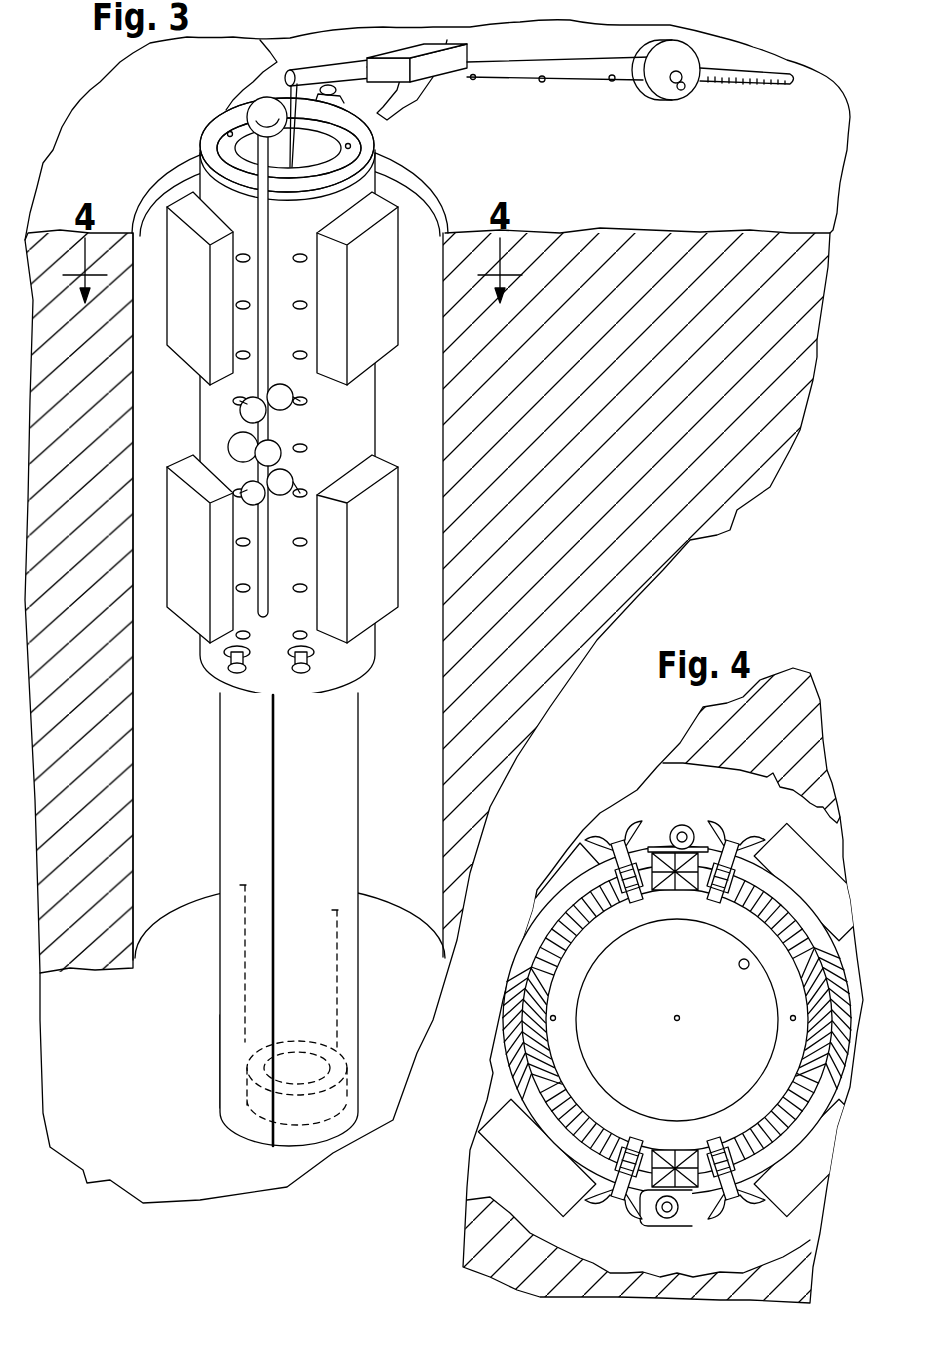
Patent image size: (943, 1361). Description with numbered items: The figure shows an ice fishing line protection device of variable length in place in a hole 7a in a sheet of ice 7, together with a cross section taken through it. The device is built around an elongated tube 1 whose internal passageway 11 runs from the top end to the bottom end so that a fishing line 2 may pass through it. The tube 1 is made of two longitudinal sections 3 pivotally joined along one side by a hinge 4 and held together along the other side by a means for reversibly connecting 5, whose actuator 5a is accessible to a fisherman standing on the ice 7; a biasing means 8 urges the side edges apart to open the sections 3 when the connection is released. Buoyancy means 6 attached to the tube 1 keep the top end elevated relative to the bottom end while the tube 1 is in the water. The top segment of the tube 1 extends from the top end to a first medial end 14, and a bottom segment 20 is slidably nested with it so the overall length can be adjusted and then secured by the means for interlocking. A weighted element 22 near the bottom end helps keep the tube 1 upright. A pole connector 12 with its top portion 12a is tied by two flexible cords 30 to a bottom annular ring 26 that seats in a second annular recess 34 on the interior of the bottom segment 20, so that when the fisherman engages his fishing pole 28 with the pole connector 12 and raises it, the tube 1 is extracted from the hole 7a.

In FIG. 3, the elongated tube 1 is at (378, 142).
In FIG. 4, the elongated tube 1 is at (700, 1192).
In FIG. 3, the fishing line 2 is at (274, 62).
In FIG. 4, the fishing line 2 is at (680, 1018).
In FIG. 3, the longitudinal sections 3 is at (200, 418).
In FIG. 4, the hinge 4 is at (690, 846).
In FIG. 3, the means for reversibly connecting 5 is at (292, 462).
In FIG. 4, the means for reversibly connecting 5 is at (671, 1228).
In FIG. 3, the actuator 5a is at (199, 172).
In FIG. 3, the buoyancy means 6 is at (167, 338).
In FIG. 4, the buoyancy means 6 is at (587, 848).
In FIG. 3, the sheet of ice 7 is at (604, 228).
In FIG. 4, the sheet of ice 7 is at (782, 741).
In FIG. 3, the hole 7a is at (414, 216).
In FIG. 4, the biasing means 8 is at (678, 828).
In FIG. 4, the internal passageway 11 is at (640, 1015).
In FIG. 3, the pole connector 12 is at (462, 82).
In FIG. 3, the box cover 12a is at (455, 46).
In FIG. 3, the first medial end 14 is at (360, 660).
In FIG. 3, the bottom segment 20 is at (218, 1003).
In FIG. 3, the weighted element 22 is at (330, 1113).
In FIG. 3, the bottom annular ring 26 is at (295, 1123).
In FIG. 4, the bottom annular ring 26 is at (620, 1096).
In FIG. 3, the fishing pole 28 is at (609, 108).
In FIG. 3, the flexible cord 30 is at (230, 133).
In FIG. 3, the second annular recess 34 is at (236, 1108).